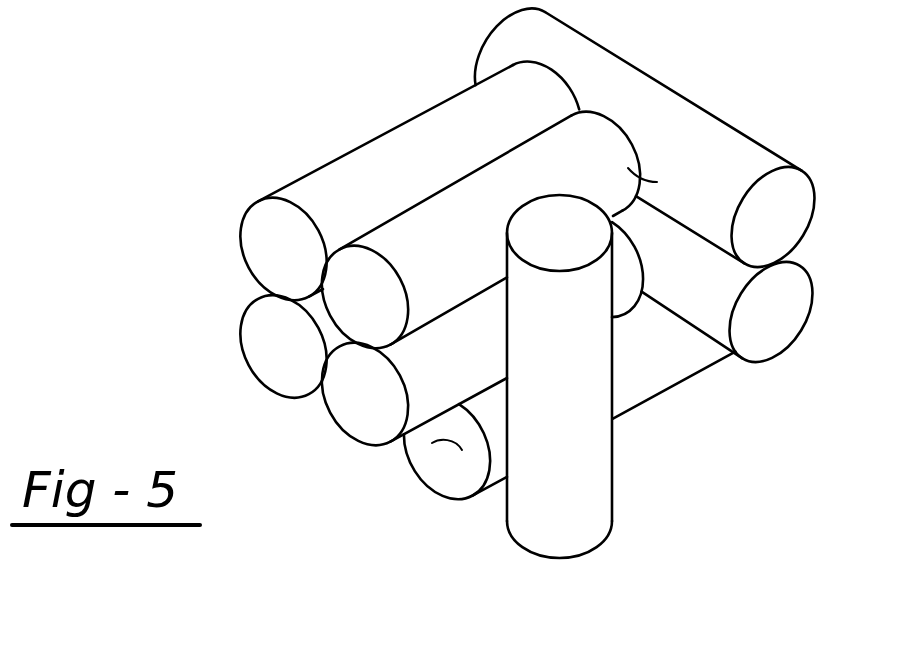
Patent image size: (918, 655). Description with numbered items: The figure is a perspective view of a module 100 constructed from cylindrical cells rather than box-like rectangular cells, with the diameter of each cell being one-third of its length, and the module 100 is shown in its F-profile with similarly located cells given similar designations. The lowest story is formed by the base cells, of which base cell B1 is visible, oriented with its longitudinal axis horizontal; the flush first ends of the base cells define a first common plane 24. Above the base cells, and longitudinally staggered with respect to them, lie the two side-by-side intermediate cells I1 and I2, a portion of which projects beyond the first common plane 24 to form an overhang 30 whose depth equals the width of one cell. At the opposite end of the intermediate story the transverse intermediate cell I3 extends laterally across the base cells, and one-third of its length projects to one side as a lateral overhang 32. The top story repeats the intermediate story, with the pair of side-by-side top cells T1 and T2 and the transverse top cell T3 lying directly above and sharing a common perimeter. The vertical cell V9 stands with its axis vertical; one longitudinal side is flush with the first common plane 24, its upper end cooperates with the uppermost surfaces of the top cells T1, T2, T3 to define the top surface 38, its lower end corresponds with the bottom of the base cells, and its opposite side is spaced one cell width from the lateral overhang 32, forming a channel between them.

The module 100 is at (262, 152).
The top cell T1 is at (485, 203).
The top cell T2 is at (391, 164).
The transverse top cell T3 is at (660, 108).
The intermediate cell I1 is at (365, 395).
The intermediate cell I2 is at (272, 340).
The transverse intermediate cell I3 is at (785, 298).
The base cell B1 is at (658, 350).
The vertical cell V9 is at (586, 516).
The top surface 38 is at (640, 178).
The lateral overhang 32 is at (760, 365).
The overhang 30 is at (357, 448).
The first common plane 24 is at (462, 450).